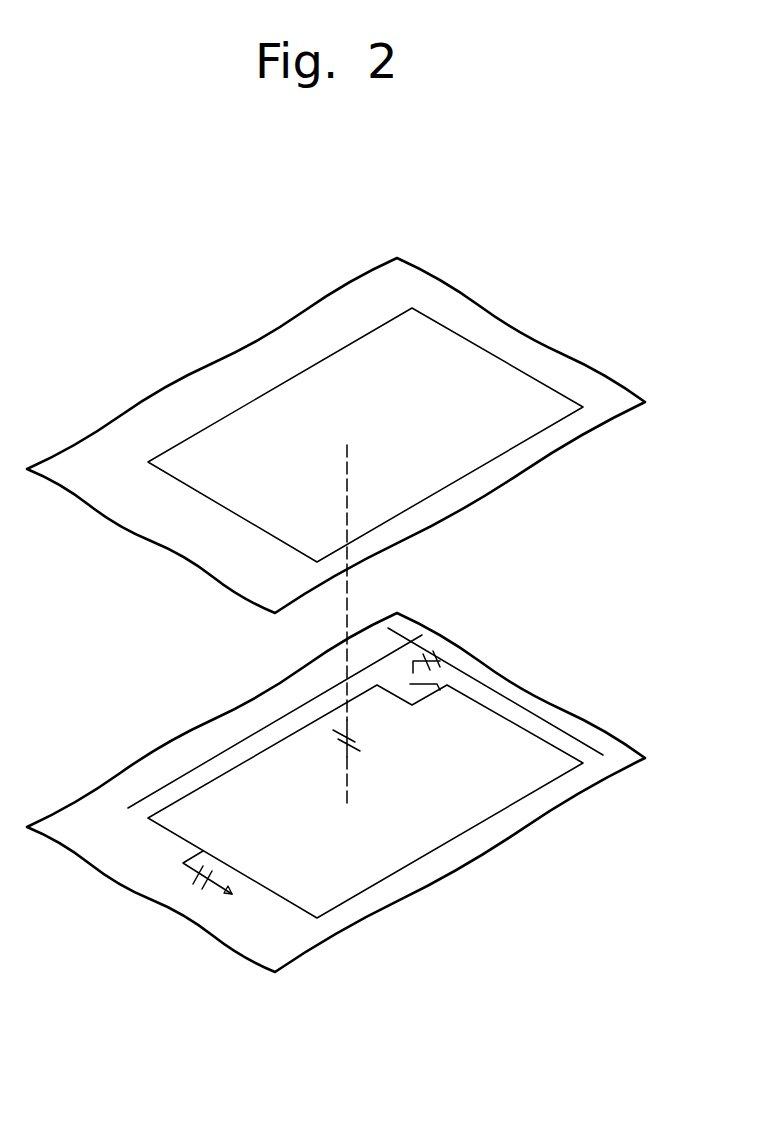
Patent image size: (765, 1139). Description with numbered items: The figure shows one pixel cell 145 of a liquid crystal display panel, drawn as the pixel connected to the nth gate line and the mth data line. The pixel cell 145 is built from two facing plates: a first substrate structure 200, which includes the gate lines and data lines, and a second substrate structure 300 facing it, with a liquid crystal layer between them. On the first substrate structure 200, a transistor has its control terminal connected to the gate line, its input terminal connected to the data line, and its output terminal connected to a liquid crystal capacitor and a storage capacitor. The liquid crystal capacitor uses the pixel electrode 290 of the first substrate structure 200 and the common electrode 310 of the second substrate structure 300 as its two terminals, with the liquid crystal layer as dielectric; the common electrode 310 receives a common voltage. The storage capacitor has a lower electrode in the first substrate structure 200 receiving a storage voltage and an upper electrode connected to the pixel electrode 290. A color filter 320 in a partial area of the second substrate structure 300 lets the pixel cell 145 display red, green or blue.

The pixel cell 145 is at (575, 189).
The second substrate structure 300 is at (531, 331).
The common electrode 310 is at (283, 415).
The color filter 320 is at (327, 313).
The first substrate structure 200 is at (554, 701).
The pixel electrode 290 is at (242, 790).